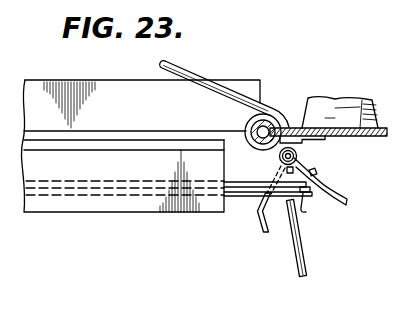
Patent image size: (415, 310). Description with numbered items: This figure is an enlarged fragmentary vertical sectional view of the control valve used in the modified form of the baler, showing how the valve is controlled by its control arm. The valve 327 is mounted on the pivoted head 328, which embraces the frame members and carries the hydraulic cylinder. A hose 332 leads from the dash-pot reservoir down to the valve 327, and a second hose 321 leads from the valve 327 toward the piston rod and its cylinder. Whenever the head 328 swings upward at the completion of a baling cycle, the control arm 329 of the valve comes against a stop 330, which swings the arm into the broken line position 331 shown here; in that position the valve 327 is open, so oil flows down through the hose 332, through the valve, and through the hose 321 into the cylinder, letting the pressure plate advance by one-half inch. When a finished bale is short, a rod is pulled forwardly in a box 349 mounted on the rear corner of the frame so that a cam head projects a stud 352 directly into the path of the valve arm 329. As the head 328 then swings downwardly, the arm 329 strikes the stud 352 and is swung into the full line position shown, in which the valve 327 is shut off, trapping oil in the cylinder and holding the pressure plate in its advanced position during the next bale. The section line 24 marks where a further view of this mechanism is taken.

The line 24— 24 is at (118, 186).
The hose 321 is at (306, 254).
The valve 327 is at (298, 153).
The pivoted head 328 is at (358, 118).
The control arm 329 is at (348, 206).
The stop 330 is at (318, 172).
The broken line position 331 is at (258, 214).
The hose 332 is at (204, 73).
The box 349 is at (262, 178).
The stud 352 is at (321, 210).